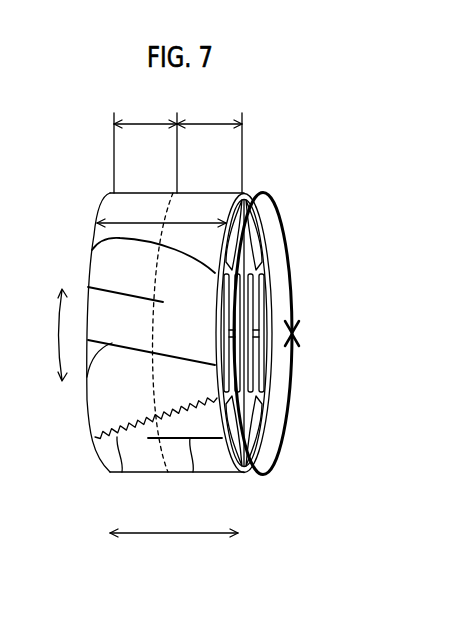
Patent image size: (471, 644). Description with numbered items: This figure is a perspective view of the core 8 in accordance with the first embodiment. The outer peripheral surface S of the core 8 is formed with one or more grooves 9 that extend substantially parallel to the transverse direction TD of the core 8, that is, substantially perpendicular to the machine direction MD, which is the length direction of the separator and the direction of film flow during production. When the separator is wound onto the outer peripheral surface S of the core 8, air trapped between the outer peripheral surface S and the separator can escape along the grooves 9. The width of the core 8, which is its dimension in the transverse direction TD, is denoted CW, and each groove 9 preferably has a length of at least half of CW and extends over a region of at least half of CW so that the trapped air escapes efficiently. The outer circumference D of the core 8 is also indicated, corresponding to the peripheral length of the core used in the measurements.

The core 8 is at (82, 223).
The groove 9 is at (89, 284).
The outer peripheral surface S is at (147, 213).
The outer circumference D is at (290, 277).
The machine direction MD is at (44, 335).
The transverse direction TD is at (174, 548).
The width of the core CW is at (169, 161).